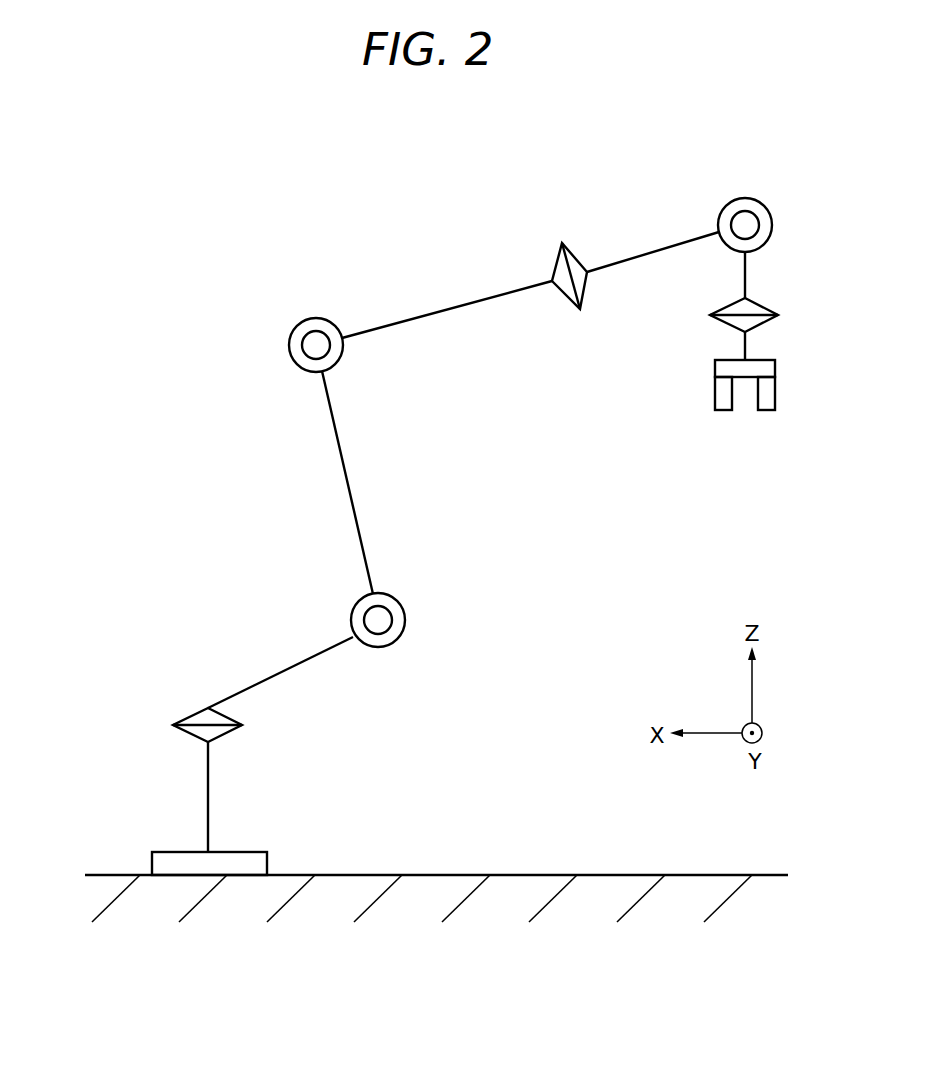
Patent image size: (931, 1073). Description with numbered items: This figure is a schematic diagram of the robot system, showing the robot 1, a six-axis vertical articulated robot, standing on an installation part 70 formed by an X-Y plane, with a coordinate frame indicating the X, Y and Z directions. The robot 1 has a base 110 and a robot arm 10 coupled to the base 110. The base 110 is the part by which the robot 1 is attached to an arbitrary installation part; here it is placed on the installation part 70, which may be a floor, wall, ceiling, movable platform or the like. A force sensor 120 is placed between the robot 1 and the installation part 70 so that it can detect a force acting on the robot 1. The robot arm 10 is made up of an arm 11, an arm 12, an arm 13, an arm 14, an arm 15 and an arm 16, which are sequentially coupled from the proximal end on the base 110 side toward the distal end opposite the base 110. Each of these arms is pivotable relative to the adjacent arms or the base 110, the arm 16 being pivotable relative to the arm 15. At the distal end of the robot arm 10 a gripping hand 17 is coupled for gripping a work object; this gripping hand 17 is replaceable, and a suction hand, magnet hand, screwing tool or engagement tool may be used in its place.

The robot 1 is at (409, 212).
The robot arm 10 is at (374, 320).
The arm 11 is at (272, 677).
The arm 12 is at (337, 451).
The arm 13 is at (467, 302).
The arm 14 is at (660, 248).
The arm 15 is at (745, 280).
The arm 16 is at (745, 347).
The gripping hand 17 is at (715, 397).
The installation part 70 is at (538, 875).
The base 110 is at (208, 787).
The force sensor 120 is at (267, 862).